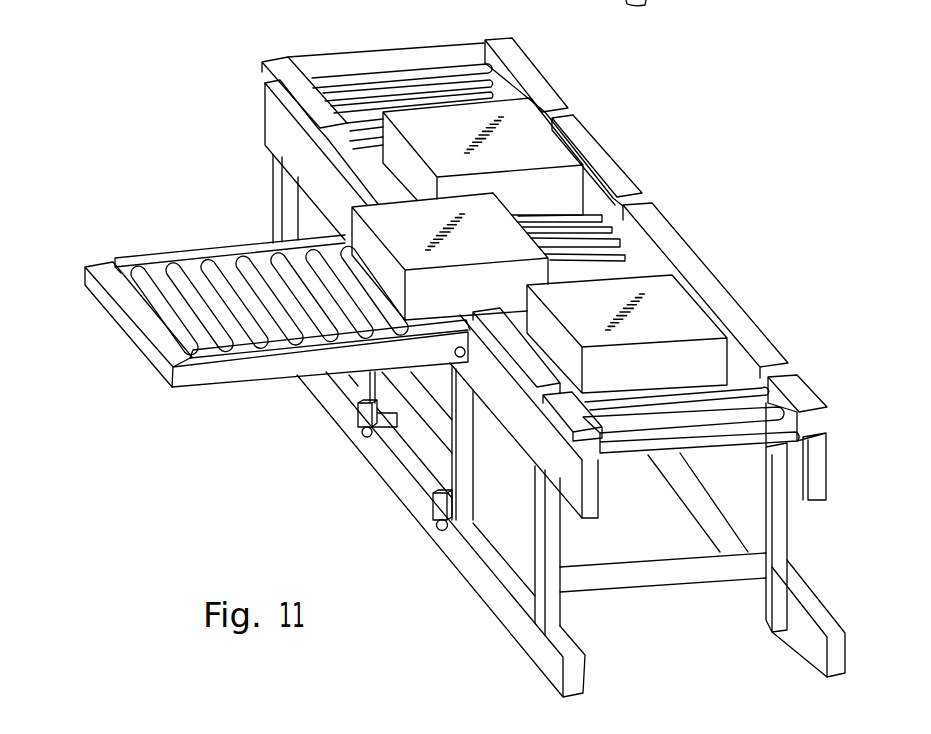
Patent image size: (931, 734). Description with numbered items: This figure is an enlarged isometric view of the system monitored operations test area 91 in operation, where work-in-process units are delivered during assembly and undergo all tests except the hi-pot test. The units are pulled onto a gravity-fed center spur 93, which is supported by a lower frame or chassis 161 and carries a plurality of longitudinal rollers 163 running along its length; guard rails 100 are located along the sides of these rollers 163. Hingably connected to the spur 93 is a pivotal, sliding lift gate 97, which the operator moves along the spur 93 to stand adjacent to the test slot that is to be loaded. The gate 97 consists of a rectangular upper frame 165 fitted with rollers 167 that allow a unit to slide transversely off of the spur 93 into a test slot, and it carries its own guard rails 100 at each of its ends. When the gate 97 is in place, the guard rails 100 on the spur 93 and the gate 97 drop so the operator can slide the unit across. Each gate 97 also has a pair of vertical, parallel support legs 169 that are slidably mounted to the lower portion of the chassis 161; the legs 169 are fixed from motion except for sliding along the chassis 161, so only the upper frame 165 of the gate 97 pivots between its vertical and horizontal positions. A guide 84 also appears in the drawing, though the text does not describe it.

The system monitored operations (SMOPS) test area 91 is at (160, 125).
The gravity-fed center spur 93 is at (397, 80).
The pivotal, sliding lift gate 97 is at (136, 241).
The guard rails 100 is at (280, 65).
The main conveyor frame side rail 84 is at (355, 203).
The lower frame or chassis 161 is at (503, 608).
The longitudinal rollers 163 is at (625, 253).
The rectangular frame 165 is at (216, 372).
The rollers 167 is at (160, 322).
The vertical, parallel support legs 169 is at (465, 477).